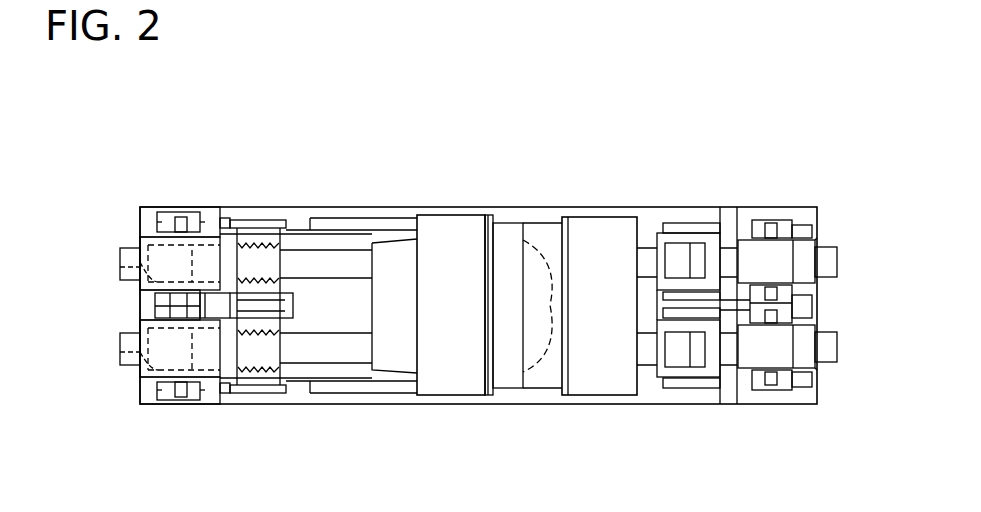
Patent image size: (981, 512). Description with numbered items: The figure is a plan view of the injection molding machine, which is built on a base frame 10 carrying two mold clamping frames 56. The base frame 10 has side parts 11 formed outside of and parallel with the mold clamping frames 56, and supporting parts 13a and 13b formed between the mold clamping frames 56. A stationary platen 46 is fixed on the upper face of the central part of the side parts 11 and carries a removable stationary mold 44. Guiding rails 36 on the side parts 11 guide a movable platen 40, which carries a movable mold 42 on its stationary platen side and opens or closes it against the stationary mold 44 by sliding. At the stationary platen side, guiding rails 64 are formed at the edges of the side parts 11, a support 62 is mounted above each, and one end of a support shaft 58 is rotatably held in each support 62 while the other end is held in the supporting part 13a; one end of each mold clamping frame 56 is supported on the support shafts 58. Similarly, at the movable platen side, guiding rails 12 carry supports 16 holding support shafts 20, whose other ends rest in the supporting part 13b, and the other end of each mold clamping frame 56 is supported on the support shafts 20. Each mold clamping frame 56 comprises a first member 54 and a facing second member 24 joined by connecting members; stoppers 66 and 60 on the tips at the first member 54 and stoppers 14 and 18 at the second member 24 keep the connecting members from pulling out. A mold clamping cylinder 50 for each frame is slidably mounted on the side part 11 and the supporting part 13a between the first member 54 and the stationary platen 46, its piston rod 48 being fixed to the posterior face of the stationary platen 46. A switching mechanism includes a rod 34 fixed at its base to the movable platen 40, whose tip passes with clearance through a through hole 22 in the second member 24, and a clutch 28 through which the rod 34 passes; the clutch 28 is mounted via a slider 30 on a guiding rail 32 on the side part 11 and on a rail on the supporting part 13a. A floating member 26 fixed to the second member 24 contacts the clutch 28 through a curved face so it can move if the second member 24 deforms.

The base frame 10 is at (643, 207).
The side part 11 is at (448, 215).
The guiding rail 12 is at (146, 207).
The supporting part 13a is at (818, 305).
The supporting part 13b is at (140, 307).
The stopper 14 is at (118, 342).
The support 16 is at (166, 213).
The stopper 18 is at (118, 250).
The support shaft 20 is at (181, 217).
The through hole 22 is at (118, 275).
The second member 24 is at (138, 240).
The floating member 26 is at (224, 207).
The clutch 28 is at (311, 233).
The slider 30 is at (283, 220).
The guiding rail 32 is at (256, 220).
The rod 34 is at (337, 248).
The guiding rail 36 is at (385, 218).
The movable platen 40 is at (488, 215).
The movable mold 42 is at (506, 404).
The stationary mold 44 is at (543, 404).
The stationary platen 46 is at (600, 217).
The piston rod 48 is at (652, 232).
The mold clamping cylinder 50 is at (692, 223).
The first member 54 is at (818, 212).
The mold clamping frame 56 is at (818, 242).
The support shaft 58 is at (770, 220).
The stopper 60 is at (838, 262).
The support 62 is at (778, 222).
The guiding rail 64 is at (797, 225).
The stopper 66 is at (838, 348).